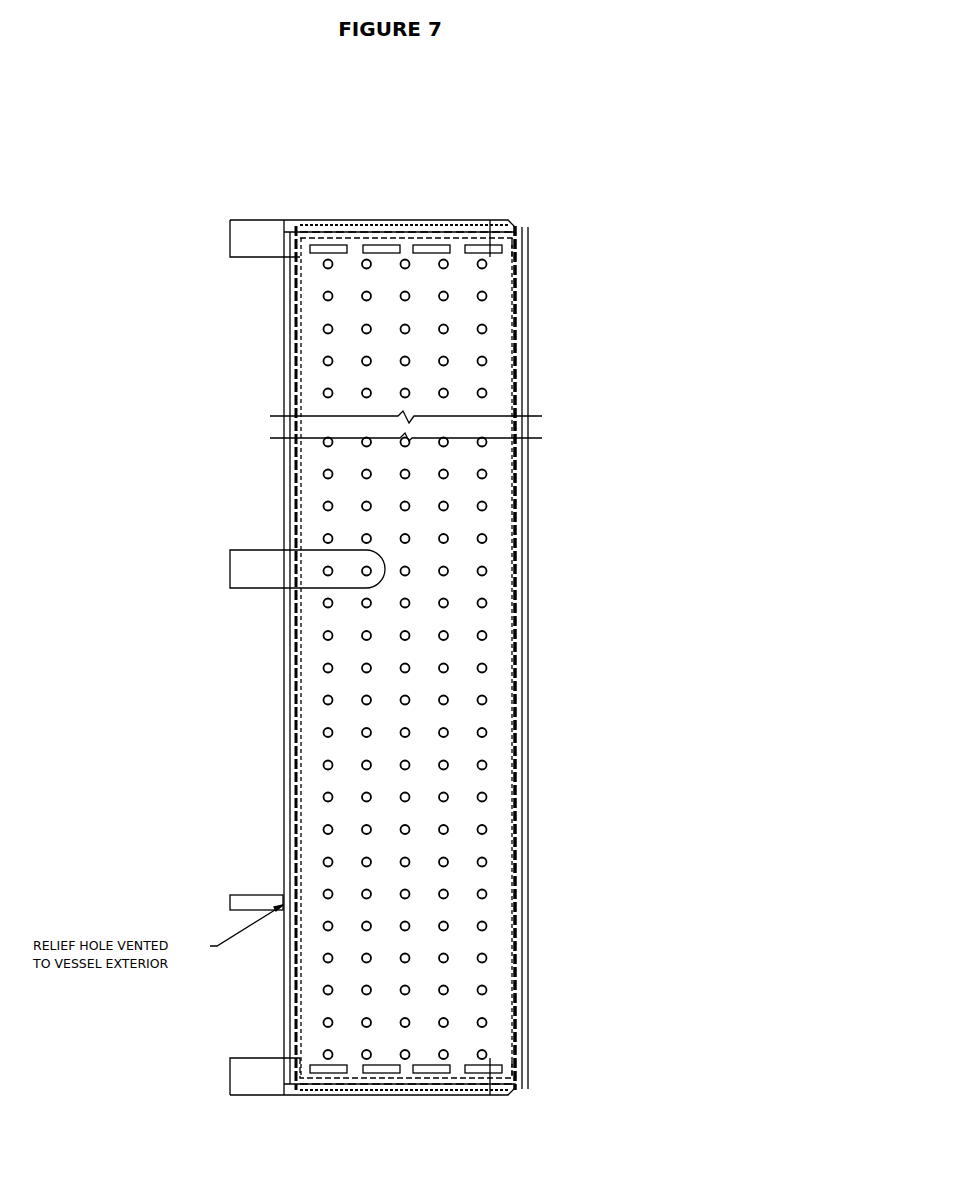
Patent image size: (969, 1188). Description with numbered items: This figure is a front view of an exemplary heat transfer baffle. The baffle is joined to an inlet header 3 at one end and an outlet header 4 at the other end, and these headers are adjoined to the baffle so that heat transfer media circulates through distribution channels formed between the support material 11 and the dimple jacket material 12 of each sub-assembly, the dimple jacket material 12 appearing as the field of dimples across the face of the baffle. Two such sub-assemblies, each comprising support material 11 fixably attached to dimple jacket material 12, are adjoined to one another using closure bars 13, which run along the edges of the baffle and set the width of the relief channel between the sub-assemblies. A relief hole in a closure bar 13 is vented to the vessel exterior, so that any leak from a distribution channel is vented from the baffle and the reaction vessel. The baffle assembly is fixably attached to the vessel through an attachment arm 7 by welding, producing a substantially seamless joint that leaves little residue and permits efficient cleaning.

The inlet header 3 is at (350, 1097).
The outlet header 4 is at (308, 217).
The attachment arm 7 is at (258, 591).
The support material 11 is at (525, 820).
The dimple jacket material 12 is at (487, 509).
The closure bar 13 is at (519, 227).